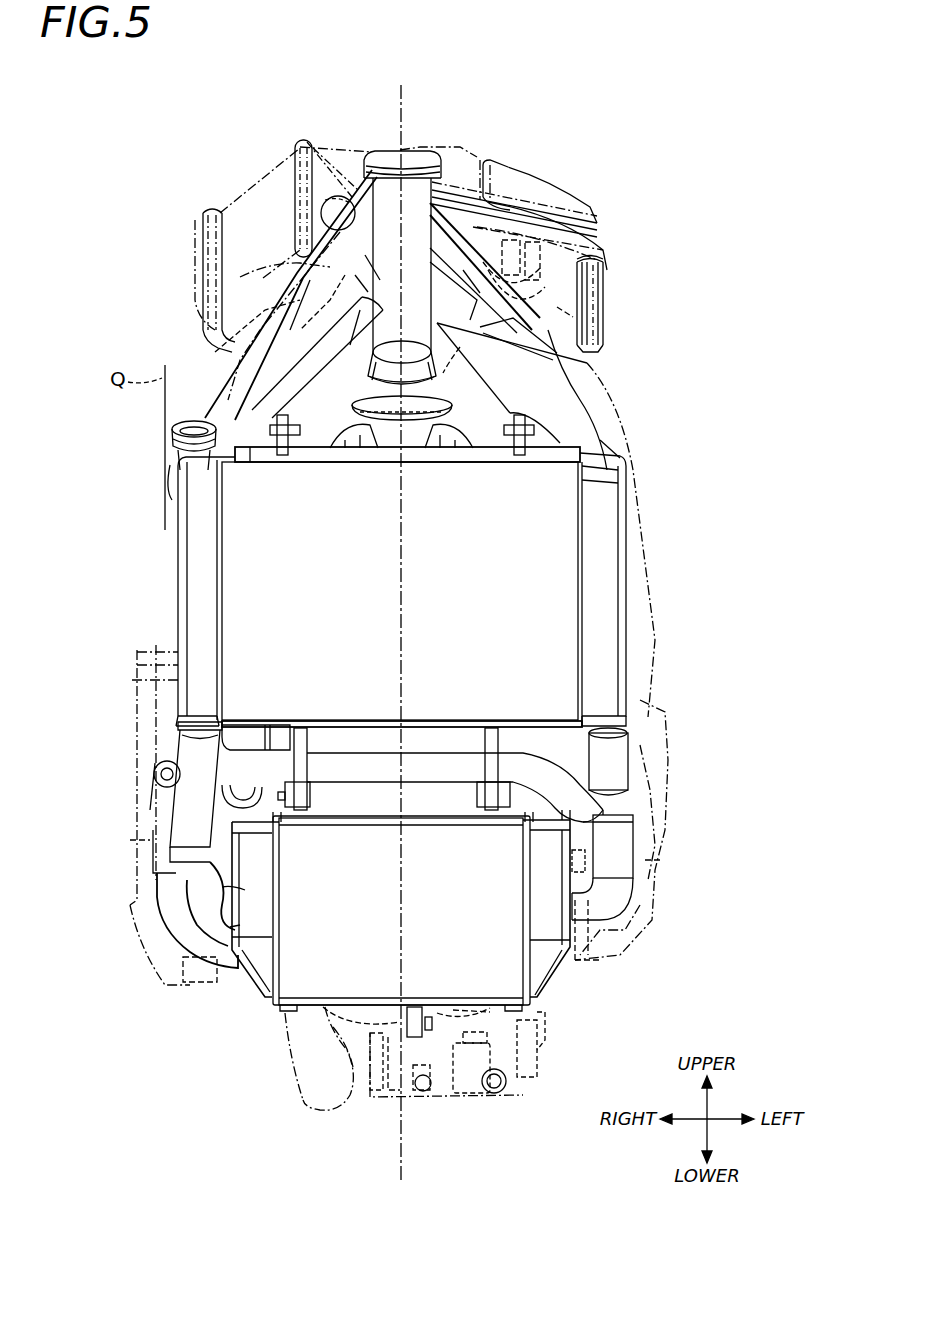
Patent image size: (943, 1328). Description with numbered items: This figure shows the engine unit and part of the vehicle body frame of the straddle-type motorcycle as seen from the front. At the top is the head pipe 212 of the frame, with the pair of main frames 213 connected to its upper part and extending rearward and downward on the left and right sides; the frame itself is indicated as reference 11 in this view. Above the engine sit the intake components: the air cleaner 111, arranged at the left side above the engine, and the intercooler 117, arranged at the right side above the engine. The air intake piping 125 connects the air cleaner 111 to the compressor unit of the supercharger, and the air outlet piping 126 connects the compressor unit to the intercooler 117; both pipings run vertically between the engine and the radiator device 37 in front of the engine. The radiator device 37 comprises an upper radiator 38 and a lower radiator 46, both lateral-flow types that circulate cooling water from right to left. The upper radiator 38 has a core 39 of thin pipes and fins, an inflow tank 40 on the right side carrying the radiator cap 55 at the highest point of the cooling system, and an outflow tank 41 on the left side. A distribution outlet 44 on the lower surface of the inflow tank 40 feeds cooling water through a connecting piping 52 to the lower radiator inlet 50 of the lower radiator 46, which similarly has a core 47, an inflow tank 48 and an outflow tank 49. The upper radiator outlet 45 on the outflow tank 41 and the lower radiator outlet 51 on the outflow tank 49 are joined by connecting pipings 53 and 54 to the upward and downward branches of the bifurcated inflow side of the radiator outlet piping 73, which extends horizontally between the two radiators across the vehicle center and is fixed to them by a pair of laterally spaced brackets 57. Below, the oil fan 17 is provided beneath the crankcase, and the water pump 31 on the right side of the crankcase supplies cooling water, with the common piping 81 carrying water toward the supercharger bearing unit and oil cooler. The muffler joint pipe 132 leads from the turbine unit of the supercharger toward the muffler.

The vehicle body frame 11 is at (247, 157).
The oil fan 17 is at (445, 1085).
The water pump 31 is at (145, 847).
The radiator device 37 is at (160, 616).
The upper radiator 38 is at (607, 452).
The core 39 is at (508, 552).
The inflow tank 40 is at (192, 583).
The outflow tank 41 is at (612, 628).
The distribution outlet 44 is at (178, 742).
The upper radiator outlet 45 is at (615, 742).
The lower radiator 46 is at (497, 1017).
The core 47 is at (325, 978).
The inflow tank 48 is at (225, 952).
The outflow tank 49 is at (540, 960).
The lower radiator inlet 50 is at (215, 905).
The lower radiator outlet 51 is at (572, 918).
The connecting piping 52 is at (190, 757).
The connecting piping 53 is at (617, 777).
The connecting piping 54 is at (630, 860).
The radiator cap 55 is at (172, 430).
The brackets 57 is at (275, 716).
The radiator outlet piping 73 is at (337, 777).
The common piping 81 is at (170, 900).
The air cleaner 111 is at (488, 162).
The intercooler 117 is at (240, 223).
The air intake piping 125 is at (598, 400).
The air outlet piping 126 is at (345, 262).
The muffler joint pipe 132 is at (313, 1090).
The head pipe 212 is at (388, 182).
The main frames 213 is at (215, 352).